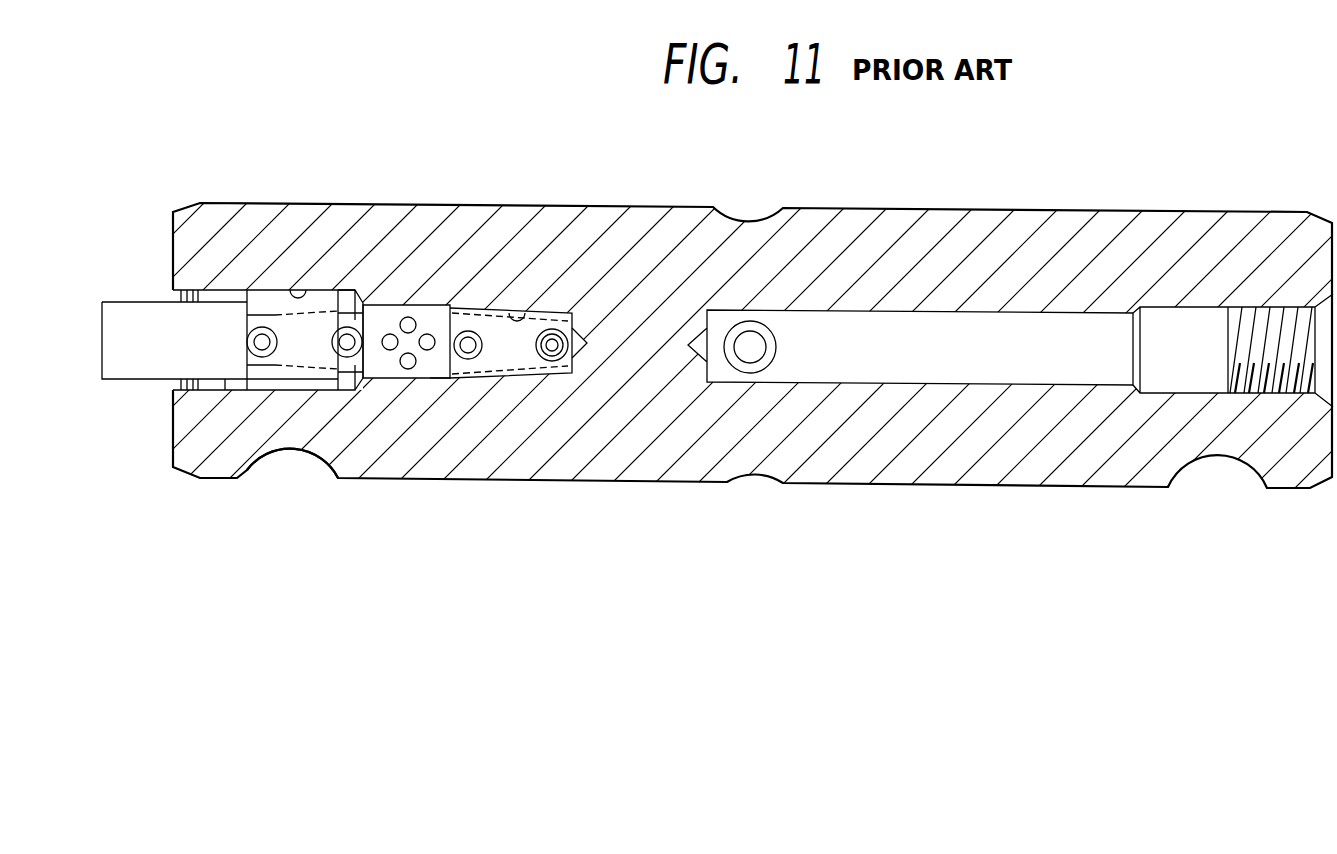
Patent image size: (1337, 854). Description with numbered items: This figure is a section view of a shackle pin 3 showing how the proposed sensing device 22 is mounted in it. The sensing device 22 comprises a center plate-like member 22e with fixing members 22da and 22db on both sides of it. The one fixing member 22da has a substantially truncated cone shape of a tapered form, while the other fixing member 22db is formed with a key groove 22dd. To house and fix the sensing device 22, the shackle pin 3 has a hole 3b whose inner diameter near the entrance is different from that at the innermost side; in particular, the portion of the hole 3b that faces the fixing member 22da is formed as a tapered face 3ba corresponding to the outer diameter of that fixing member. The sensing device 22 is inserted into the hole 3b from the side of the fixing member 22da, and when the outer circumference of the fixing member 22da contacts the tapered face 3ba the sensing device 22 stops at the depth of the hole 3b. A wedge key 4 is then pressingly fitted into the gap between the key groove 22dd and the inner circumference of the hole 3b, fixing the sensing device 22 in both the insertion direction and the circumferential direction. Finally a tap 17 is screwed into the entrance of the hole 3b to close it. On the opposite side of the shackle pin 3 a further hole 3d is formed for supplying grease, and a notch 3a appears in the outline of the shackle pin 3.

The shackle pin 3 is at (681, 223).
The notch in tool body 3a is at (314, 458).
The hole 3b is at (308, 287).
The tapered face 3ba is at (533, 313).
The hole 3d is at (1067, 322).
The wedge key 4 is at (335, 392).
The tap 17 is at (137, 372).
The sensing device 22 is at (392, 302).
The fixing member 22da is at (487, 305).
The fixing member 22db is at (263, 300).
The key groove 22dd is at (258, 372).
The center plate-like member 22e is at (440, 372).